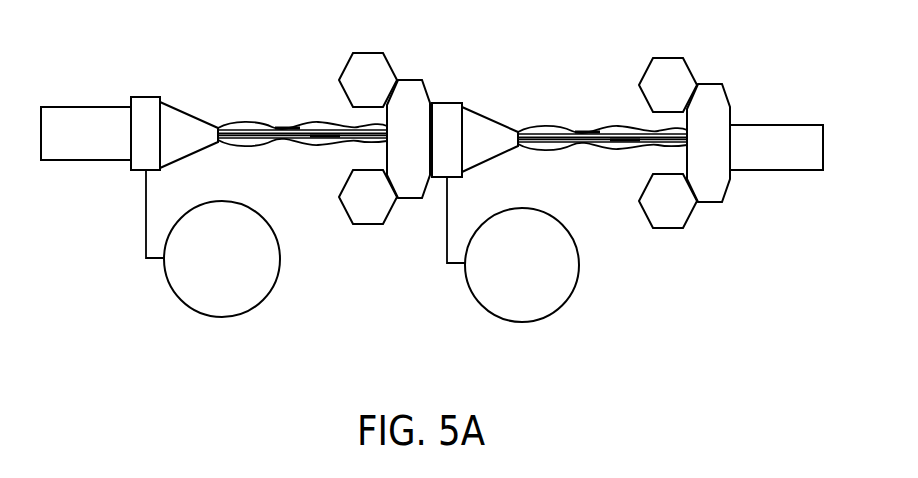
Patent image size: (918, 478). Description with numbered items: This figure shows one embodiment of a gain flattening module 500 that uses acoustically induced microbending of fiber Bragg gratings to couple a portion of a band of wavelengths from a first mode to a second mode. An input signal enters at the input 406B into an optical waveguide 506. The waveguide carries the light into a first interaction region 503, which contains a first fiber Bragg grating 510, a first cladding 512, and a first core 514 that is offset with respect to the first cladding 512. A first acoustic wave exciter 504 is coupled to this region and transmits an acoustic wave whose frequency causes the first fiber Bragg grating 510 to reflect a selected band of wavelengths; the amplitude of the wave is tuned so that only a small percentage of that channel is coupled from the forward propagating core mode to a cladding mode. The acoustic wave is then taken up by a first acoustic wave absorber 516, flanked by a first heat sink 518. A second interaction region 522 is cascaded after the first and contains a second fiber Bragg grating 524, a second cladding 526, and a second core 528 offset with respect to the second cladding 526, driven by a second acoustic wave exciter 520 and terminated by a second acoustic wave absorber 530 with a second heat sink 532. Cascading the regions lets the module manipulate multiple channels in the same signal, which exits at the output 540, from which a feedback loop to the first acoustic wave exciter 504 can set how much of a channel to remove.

The input port 406B is at (83, 88).
The gain flattening module 500 is at (432, 199).
The first fiber splice module 503 is at (268, 70).
The first acoustic wave exciter 504 is at (286, 307).
The optical waveguide 506 is at (103, 148).
The first fiber Bragg grating 510 is at (287, 126).
The first cladding 512 is at (243, 143).
The first core 514 is at (338, 146).
The first acoustic wave absorber 516 is at (392, 148).
The first heat sink 518 is at (352, 91).
The second acoustic wave exciter 520 is at (596, 286).
The second interaction region 522 is at (556, 66).
The second fiber Bragg grating 524 is at (590, 131).
The second cladding 526 is at (543, 148).
The second core 528 is at (638, 150).
The second acoustic wave absorber 530 is at (691, 153).
The second heat sink 532 is at (652, 96).
The output 540 is at (807, 159).